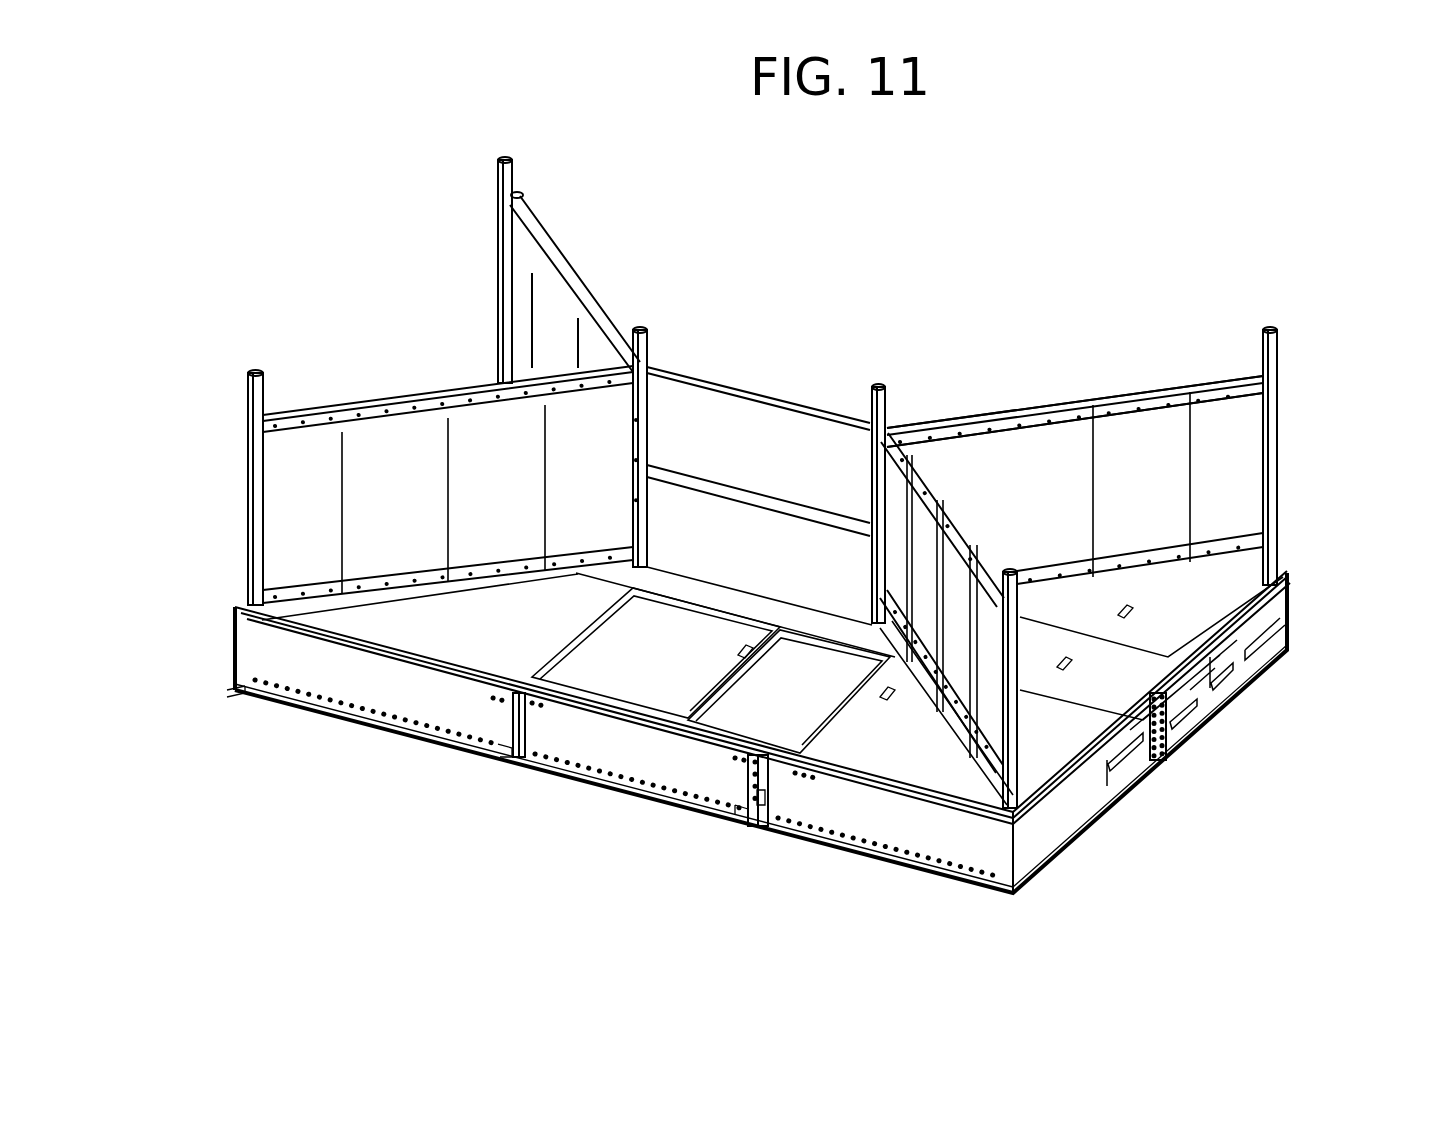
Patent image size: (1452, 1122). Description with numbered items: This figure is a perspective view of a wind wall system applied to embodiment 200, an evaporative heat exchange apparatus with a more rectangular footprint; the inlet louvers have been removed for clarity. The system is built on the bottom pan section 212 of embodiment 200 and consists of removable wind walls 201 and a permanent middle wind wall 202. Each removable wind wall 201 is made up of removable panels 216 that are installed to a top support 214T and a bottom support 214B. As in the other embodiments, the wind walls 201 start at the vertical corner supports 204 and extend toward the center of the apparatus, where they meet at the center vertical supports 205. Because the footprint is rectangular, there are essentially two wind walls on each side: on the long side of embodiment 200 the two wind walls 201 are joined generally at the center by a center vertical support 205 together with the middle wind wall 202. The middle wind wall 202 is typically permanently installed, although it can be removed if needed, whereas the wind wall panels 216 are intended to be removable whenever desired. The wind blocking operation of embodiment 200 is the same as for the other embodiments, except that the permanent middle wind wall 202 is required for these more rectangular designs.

The embodiment 200 is at (336, 203).
The removable wind wall 201 is at (533, 285).
The permanent wind wall 202 is at (728, 382).
The vertical corner support 204 is at (513, 163).
The center vertical support 205 is at (645, 330).
The bottom pan section 212 is at (592, 750).
The top support 214T is at (1230, 378).
The bottom support 214B is at (1263, 536).
The removable panel 216 is at (1223, 463).